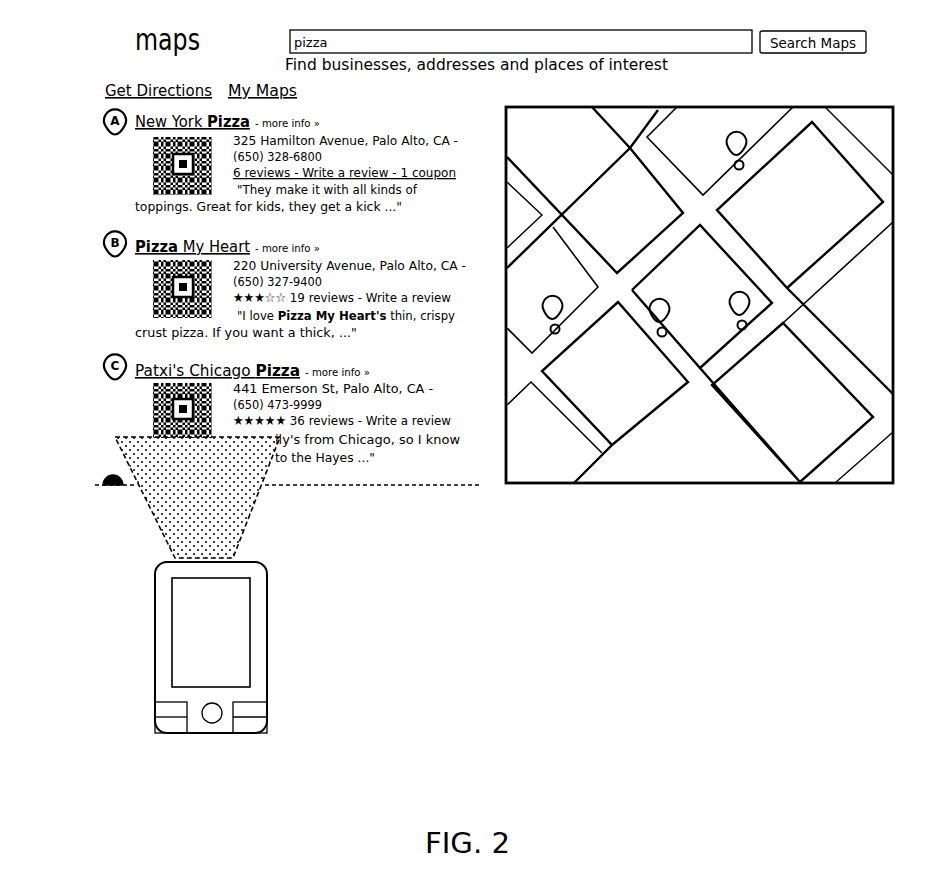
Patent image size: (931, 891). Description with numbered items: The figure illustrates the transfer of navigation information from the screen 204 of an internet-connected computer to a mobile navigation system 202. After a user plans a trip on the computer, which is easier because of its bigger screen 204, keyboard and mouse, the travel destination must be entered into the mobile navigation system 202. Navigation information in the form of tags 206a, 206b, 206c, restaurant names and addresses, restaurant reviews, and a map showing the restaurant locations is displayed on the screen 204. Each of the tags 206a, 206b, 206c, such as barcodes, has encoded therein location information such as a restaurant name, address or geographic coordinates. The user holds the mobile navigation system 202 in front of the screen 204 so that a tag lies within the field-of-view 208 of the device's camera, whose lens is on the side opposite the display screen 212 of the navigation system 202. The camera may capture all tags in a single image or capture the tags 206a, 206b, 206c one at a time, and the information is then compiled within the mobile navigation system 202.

The mobile navigation system 202 is at (286, 647).
The screen 204 is at (423, 470).
The tag 206a is at (153, 157).
The tag 206b is at (153, 277).
The tag 206c is at (153, 397).
The field-of-view 208 is at (250, 518).
The display screen 212 is at (238, 658).